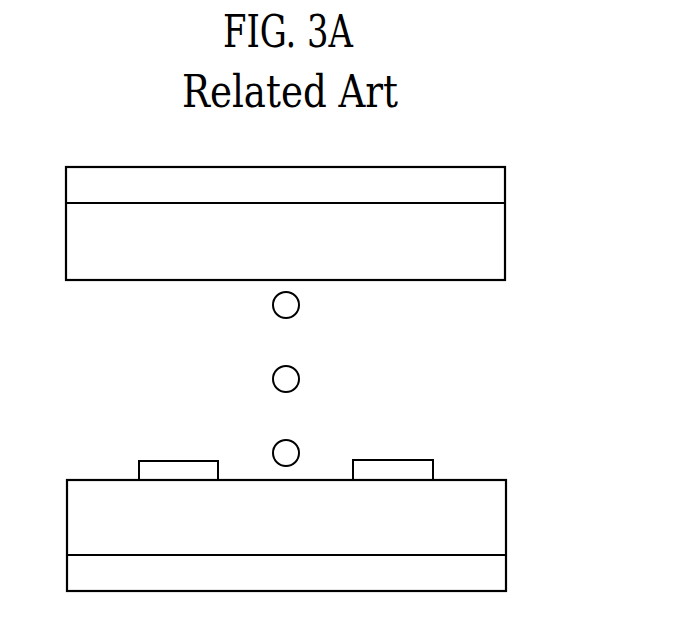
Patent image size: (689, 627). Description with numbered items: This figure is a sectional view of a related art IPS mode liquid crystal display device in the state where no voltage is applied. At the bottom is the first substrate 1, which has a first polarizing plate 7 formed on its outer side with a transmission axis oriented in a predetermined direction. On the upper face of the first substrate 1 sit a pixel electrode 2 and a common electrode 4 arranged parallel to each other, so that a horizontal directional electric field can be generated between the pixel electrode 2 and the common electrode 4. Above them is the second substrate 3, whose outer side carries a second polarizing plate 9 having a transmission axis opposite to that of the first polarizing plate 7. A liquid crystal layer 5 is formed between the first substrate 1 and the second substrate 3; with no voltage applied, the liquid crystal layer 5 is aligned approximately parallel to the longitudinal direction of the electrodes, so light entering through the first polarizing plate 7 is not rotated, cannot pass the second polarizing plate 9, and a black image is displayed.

The first substrate 1 is at (495, 518).
The pixel electrode 2 is at (178, 469).
The second substrate 3 is at (493, 240).
The common electrode 4 is at (393, 469).
The liquid crystal layer 5 is at (313, 290).
The first polarizing plate 7 is at (495, 571).
The second polarizing plate 9 is at (493, 184).